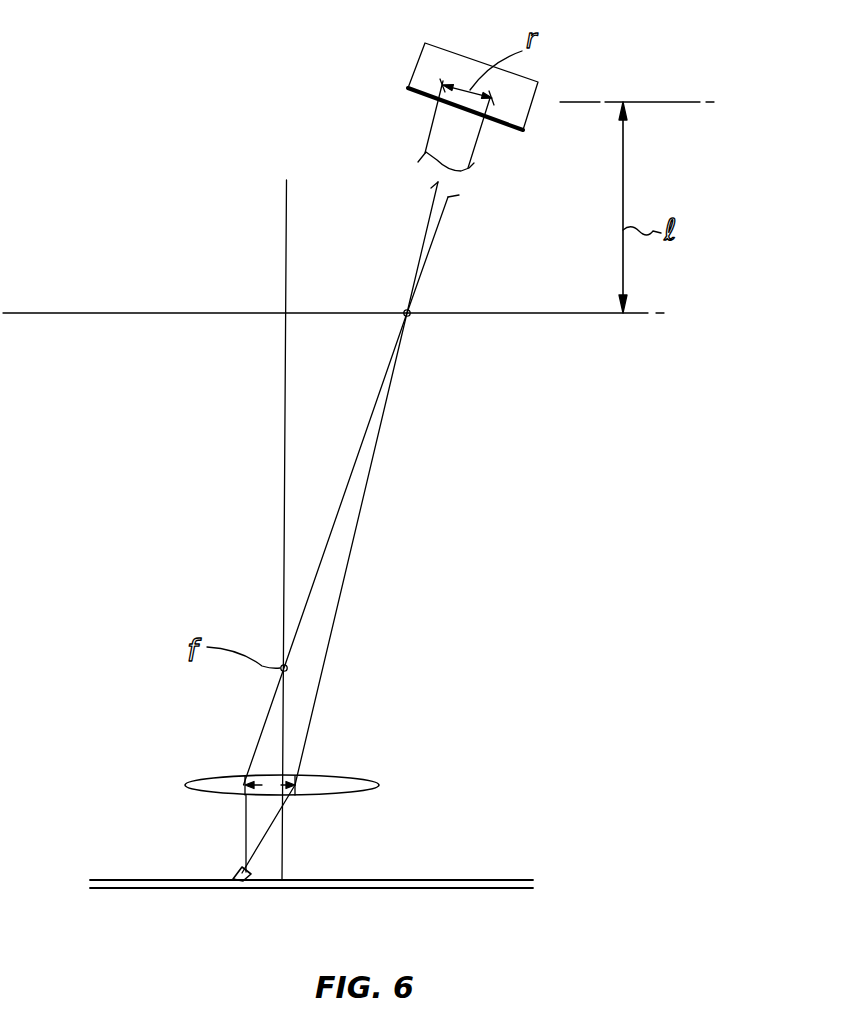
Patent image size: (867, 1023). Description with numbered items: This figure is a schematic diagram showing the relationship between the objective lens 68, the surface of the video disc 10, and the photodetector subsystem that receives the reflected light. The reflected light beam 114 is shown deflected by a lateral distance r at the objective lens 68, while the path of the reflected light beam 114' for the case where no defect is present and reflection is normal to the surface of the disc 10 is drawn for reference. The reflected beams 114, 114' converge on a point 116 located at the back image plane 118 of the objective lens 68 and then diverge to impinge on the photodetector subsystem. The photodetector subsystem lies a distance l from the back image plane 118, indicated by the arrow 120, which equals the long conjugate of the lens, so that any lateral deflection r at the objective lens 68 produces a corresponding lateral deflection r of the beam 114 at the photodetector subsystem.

The video disc 10 is at (425, 879).
The objective lens 68 is at (343, 777).
The reflected light beam 114 is at (316, 530).
The reflected light beam (normal reflection path) 114' is at (202, 833).
The convergence point 116 is at (405, 310).
The back image plane 118 is at (510, 318).
The arrow indicating distance 120 is at (623, 150).